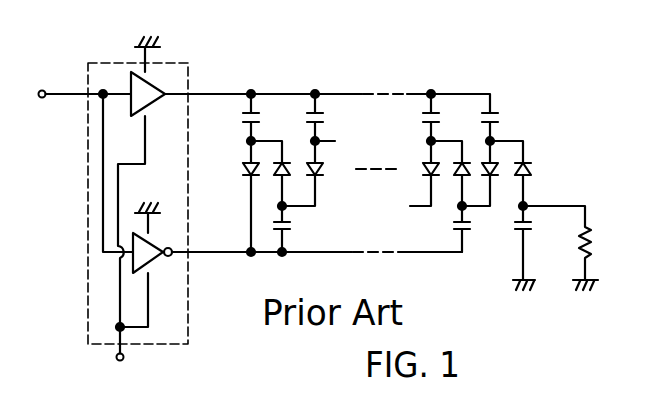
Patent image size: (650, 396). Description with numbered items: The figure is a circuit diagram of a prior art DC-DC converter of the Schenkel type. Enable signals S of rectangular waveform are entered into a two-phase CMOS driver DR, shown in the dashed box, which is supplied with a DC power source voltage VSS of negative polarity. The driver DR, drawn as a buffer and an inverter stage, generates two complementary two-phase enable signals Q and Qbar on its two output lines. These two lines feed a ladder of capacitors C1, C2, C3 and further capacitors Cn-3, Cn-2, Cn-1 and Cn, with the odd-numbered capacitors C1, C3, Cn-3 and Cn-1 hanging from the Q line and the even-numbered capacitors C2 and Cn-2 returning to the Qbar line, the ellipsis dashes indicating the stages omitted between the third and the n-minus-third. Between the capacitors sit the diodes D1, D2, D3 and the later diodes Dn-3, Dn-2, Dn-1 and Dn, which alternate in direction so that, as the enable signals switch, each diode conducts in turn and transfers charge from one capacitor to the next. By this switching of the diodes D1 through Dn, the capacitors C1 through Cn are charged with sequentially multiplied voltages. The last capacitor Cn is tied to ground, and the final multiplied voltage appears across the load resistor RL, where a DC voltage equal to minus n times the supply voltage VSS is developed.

The two-phase CMOS driver DR is at (169, 76).
The enable signals S is at (74, 95).
The DC power source voltage VSS is at (123, 359).
The two-phase enable signal Q is at (327, 93).
The two-phase enable signal (inverted) Qbar is at (210, 233).
The capacitor C1 is at (266, 117).
The capacitor C2 is at (301, 231).
The capacitor C3 is at (332, 117).
The capacitor Cn-3 is at (449, 117).
The capacitor Cn-2 is at (483, 229).
The capacitor Cn-1 is at (507, 124).
The capacitor Cn is at (535, 248).
The diode D1 is at (245, 198).
The diode D2 is at (270, 175).
The diode D3 is at (302, 173).
The diode Dn-3 is at (417, 173).
The diode Dn-2 is at (450, 175).
The diode Dn-1 is at (480, 173).
The diode Dn is at (510, 175).
The load resistor RL is at (574, 248).